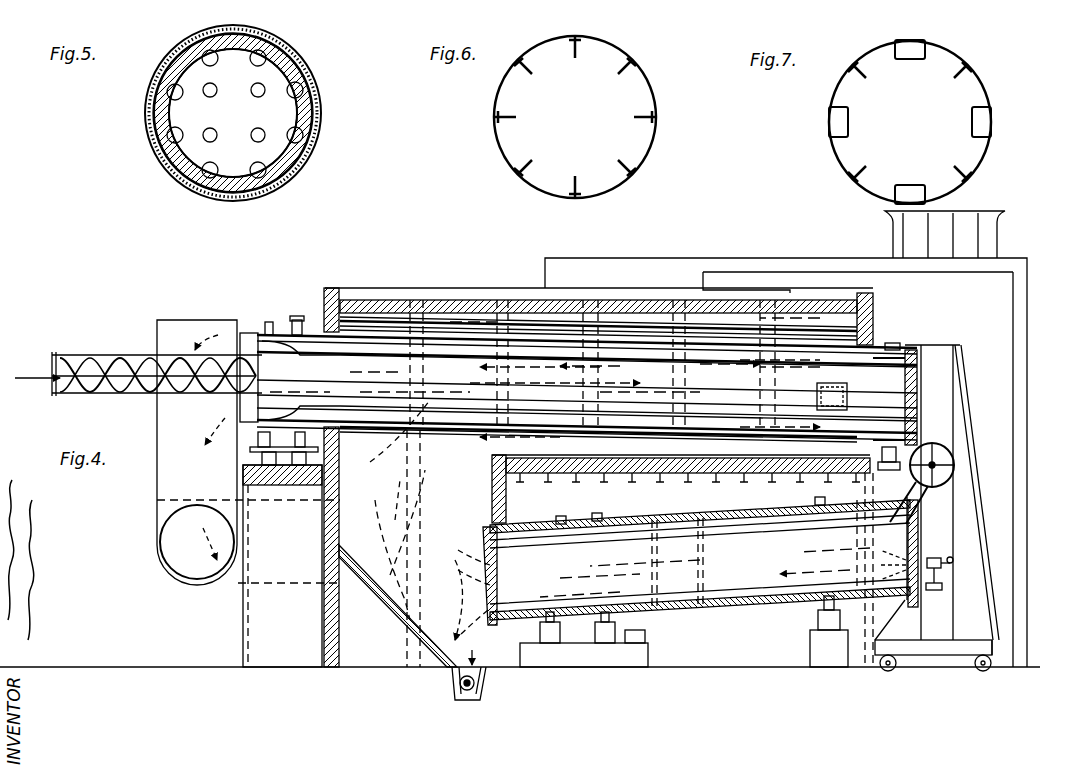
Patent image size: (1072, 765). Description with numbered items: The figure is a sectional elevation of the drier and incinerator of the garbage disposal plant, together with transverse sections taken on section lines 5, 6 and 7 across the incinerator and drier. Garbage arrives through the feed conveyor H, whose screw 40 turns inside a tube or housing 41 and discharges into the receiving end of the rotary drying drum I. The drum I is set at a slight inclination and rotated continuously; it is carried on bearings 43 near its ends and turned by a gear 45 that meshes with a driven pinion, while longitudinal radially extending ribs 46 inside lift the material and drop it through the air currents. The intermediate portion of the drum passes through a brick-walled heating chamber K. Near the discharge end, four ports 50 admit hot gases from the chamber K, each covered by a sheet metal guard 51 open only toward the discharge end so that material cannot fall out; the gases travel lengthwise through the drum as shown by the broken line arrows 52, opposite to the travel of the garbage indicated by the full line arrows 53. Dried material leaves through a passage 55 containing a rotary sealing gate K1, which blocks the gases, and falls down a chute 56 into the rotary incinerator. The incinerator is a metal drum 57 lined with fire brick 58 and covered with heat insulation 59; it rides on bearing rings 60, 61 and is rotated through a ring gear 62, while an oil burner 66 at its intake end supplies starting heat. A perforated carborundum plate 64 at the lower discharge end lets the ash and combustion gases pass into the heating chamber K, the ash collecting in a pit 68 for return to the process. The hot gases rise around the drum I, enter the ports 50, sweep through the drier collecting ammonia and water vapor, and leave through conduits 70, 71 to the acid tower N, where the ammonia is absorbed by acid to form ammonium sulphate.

In FIG. 4, the housing hood 5 is at (530, 640).
In FIG. 4, the drum shell 6 is at (445, 440).
In FIG. 4, the flow passage 7 is at (780, 396).
In FIG. 4, the screw 40 is at (55, 368).
In FIG. 4, the tube or housing 41 is at (122, 356).
In FIG. 4, the bearing 43 is at (270, 320).
In FIG. 4, the gear 45 is at (300, 316).
In FIG. 6, the radially extending ribs or projections 46 is at (575, 58).
In FIG. 7, the radially extending ribs or projections 46 is at (866, 78).
In FIG. 4, the radially extending ribs or projections 46 is at (380, 350).
In FIG. 7, the ports 50 is at (912, 38).
In FIG. 4, the ports 50 is at (840, 452).
In FIG. 7, the sheet metal guard or protector 51 is at (905, 60).
In FIG. 4, the sheet metal guard or protector 51 is at (815, 398).
In FIG. 4, the broken line arrows 52 is at (562, 441).
In FIG. 4, the full line arrows 53 is at (535, 372).
In FIG. 4, the passage 55 is at (940, 385).
In FIG. 4, the chute 56 is at (940, 498).
In FIG. 5, the metal drum 57 is at (300, 128).
In FIG. 4, the metal drum 57 is at (722, 612).
In FIG. 5, the fire brick lining 58 is at (275, 170).
In FIG. 4, the fire brick lining 58 is at (765, 575).
In FIG. 5, the heat insulating covering 59 is at (305, 66).
In FIG. 4, the heat insulating covering 59 is at (780, 610).
In FIG. 4, the bearing ring 60 is at (563, 510).
In FIG. 4, the bearing ring 61 is at (815, 495).
In FIG. 4, the ring gear 62 is at (604, 508).
In FIG. 5, the perforated carborundum plate 64 is at (182, 114).
In FIG. 4, the perforated carborundum plate 64 is at (488, 596).
In FIG. 4, the oil burner 66 is at (945, 555).
In FIG. 4, the pit 68 is at (485, 690).
In FIG. 4, the conduit or passage 70 is at (253, 400).
In FIG. 4, the conduit or passage 71 is at (197, 542).
In FIG. 4, the feed conveyor H is at (92, 356).
In FIG. 5, the rotary drying drum I is at (338, 94).
In FIG. 6, the rotary drying drum I is at (652, 152).
In FIG. 7, the rotary drying drum I is at (988, 150).
In FIG. 4, the rotary drying drum I is at (596, 521).
In FIG. 4, the heating chamber K is at (399, 460).
In FIG. 4, the rotary sealing gate K1 is at (955, 455).
In FIG. 4, the acid tower N is at (786, 439).